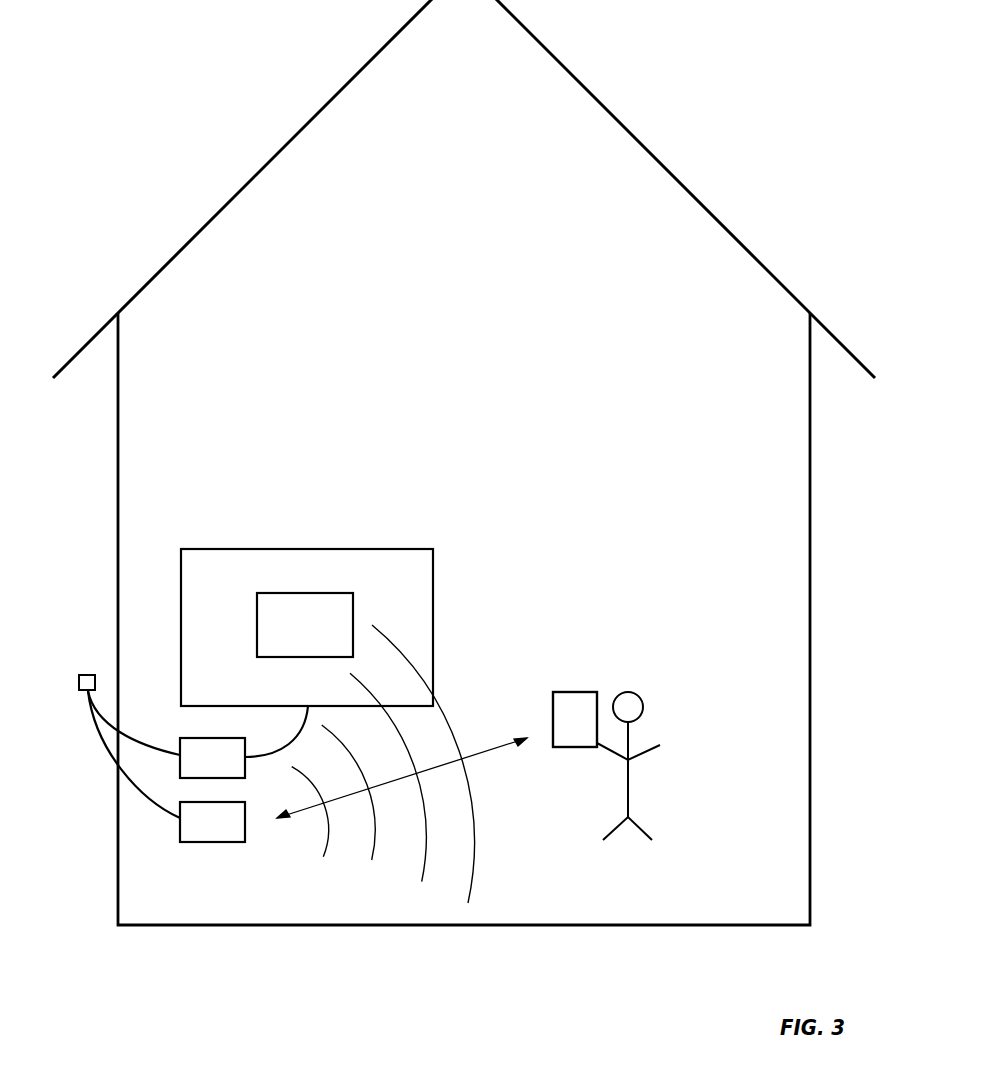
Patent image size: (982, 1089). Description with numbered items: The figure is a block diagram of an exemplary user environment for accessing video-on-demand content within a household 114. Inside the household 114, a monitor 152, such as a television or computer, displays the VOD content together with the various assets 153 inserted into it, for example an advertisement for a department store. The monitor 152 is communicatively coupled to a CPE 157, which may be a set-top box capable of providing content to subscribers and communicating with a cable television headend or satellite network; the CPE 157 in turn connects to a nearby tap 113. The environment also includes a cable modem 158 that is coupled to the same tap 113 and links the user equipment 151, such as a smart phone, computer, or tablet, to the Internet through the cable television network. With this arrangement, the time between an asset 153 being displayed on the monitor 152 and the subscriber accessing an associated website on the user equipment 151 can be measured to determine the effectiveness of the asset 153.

The household 114 is at (270, 164).
The monitor 152 is at (243, 549).
The asset 153 is at (305, 625).
The tap 113 is at (82, 675).
The CPE 157 is at (212, 758).
The cable modem 158 is at (212, 822).
The user equipment 151 is at (552, 697).